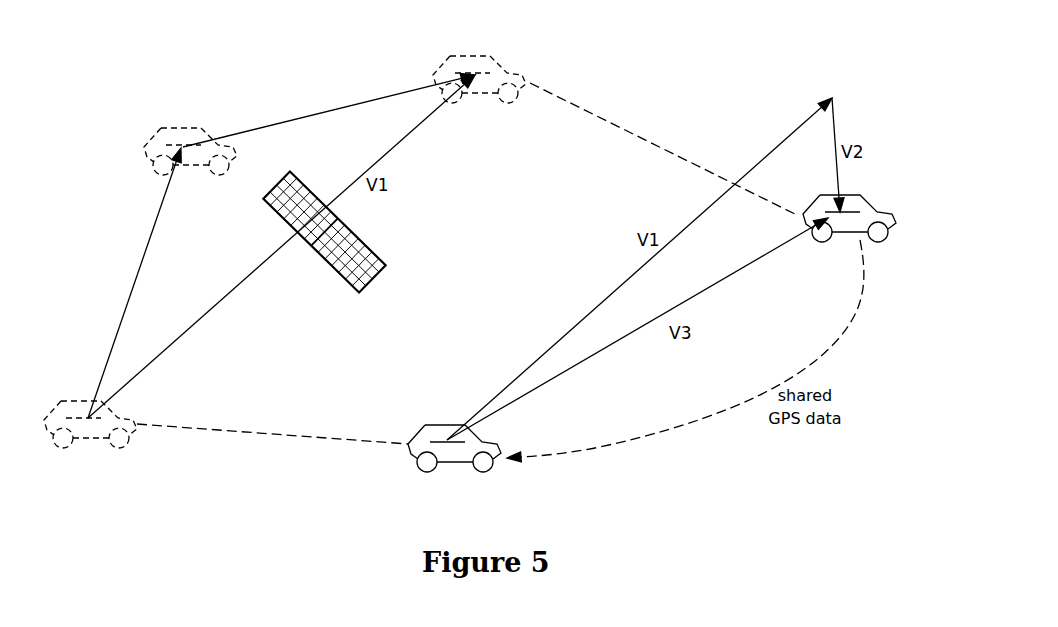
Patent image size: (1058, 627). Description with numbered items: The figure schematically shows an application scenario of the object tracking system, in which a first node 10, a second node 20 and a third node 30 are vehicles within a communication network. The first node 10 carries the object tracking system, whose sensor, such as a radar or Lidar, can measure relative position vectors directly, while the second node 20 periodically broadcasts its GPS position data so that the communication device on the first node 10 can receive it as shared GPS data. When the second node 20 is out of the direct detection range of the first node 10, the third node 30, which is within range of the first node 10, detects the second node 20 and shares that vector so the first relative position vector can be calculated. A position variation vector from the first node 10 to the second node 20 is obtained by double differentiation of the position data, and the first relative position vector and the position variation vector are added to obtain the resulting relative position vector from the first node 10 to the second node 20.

The first node 10 is at (127, 420).
The second node 20 is at (484, 56).
The third node 30 is at (188, 130).